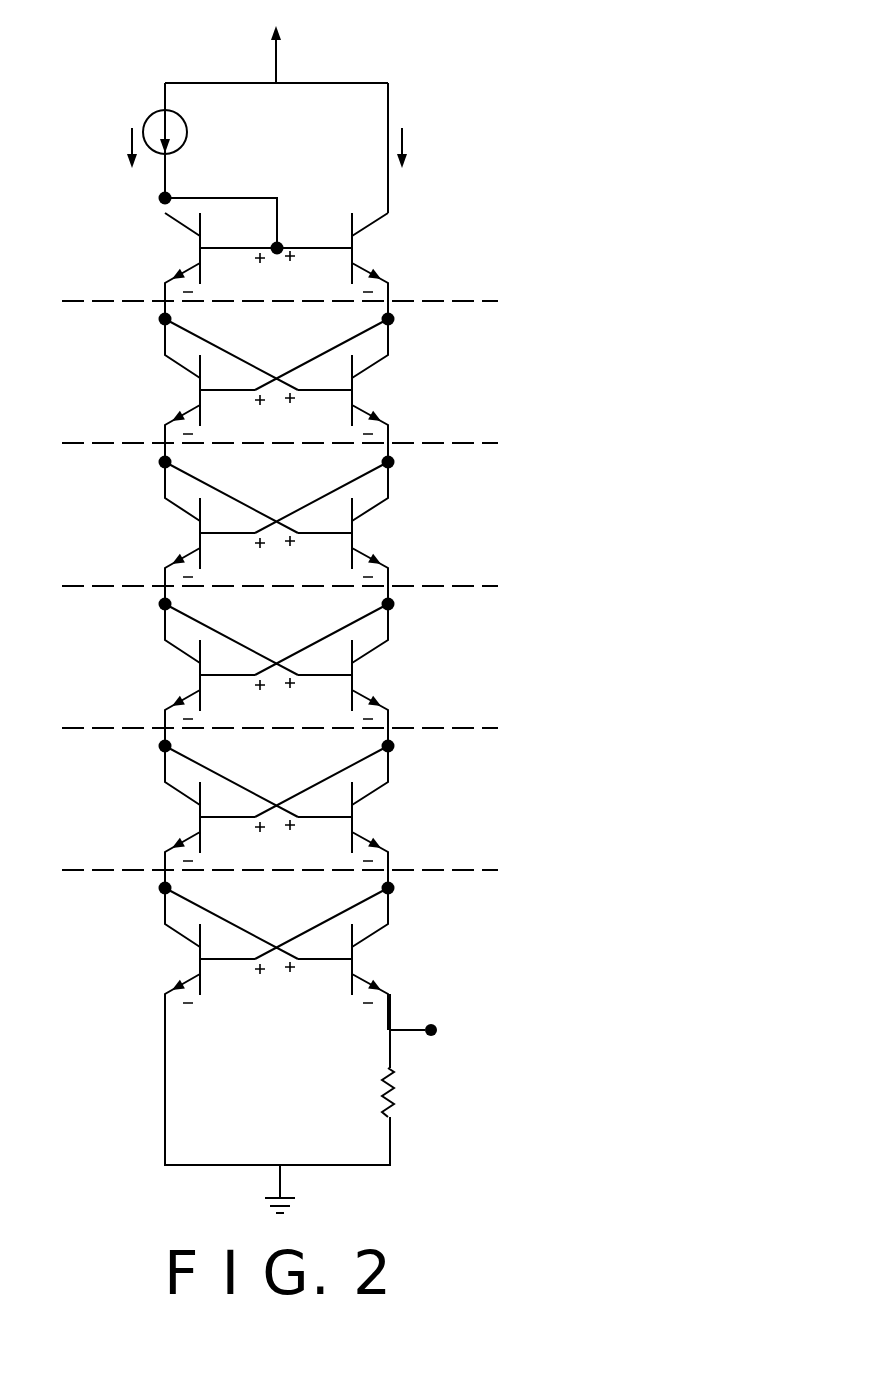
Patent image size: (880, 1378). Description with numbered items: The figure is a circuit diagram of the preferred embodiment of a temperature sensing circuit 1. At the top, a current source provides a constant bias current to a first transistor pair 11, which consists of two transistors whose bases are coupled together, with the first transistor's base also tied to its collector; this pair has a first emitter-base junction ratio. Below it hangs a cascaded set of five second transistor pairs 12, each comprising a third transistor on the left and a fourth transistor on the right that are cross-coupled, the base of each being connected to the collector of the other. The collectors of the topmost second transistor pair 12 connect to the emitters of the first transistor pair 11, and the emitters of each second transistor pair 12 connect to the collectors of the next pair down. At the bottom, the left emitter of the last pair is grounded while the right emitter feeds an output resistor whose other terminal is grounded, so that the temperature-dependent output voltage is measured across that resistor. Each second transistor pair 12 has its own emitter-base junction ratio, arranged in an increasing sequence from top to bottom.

The temperature sensing circuit 1 is at (340, 608).
The first transistor pair 11 is at (499, 212).
The second transistor pair 12 is at (513, 364).